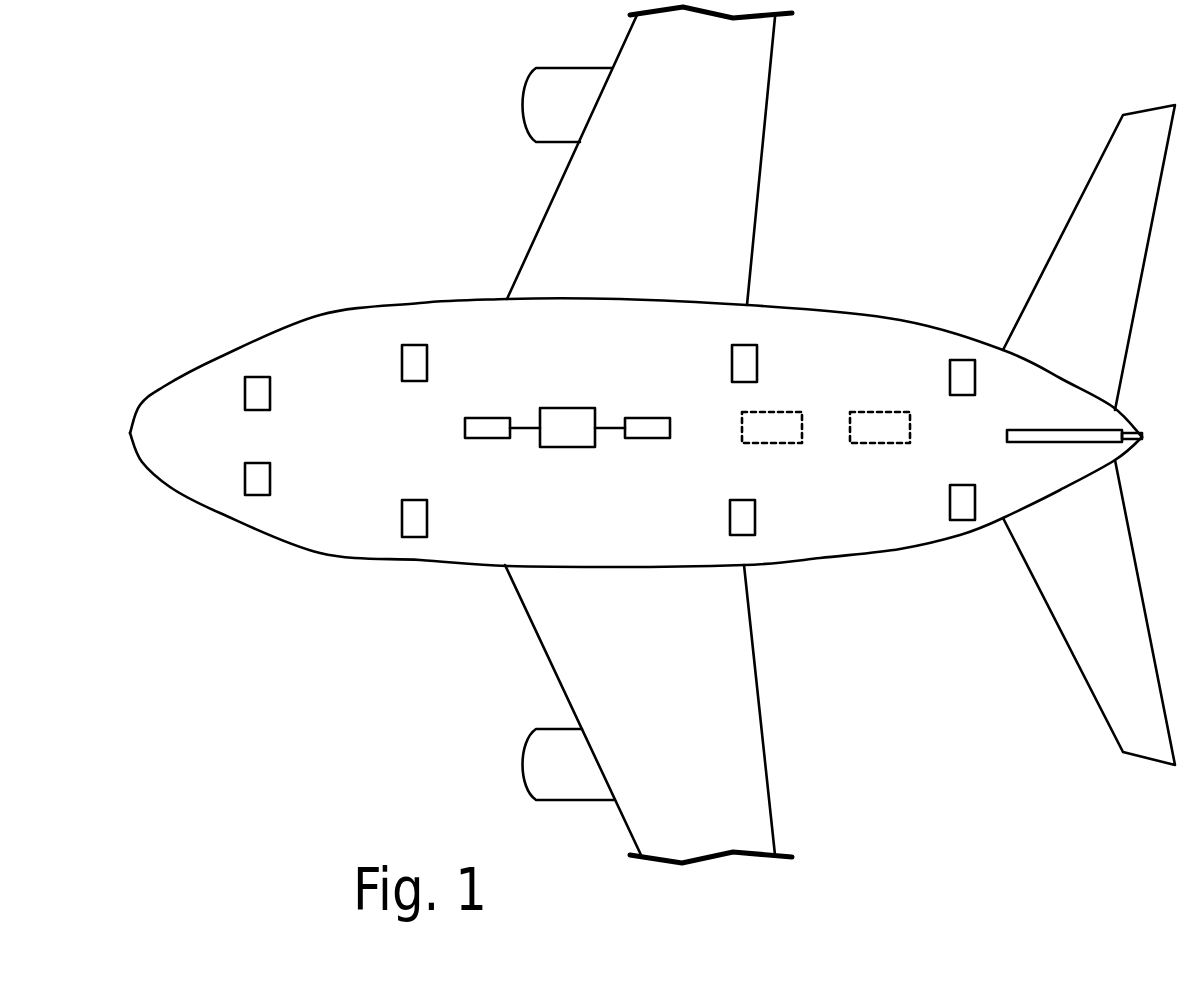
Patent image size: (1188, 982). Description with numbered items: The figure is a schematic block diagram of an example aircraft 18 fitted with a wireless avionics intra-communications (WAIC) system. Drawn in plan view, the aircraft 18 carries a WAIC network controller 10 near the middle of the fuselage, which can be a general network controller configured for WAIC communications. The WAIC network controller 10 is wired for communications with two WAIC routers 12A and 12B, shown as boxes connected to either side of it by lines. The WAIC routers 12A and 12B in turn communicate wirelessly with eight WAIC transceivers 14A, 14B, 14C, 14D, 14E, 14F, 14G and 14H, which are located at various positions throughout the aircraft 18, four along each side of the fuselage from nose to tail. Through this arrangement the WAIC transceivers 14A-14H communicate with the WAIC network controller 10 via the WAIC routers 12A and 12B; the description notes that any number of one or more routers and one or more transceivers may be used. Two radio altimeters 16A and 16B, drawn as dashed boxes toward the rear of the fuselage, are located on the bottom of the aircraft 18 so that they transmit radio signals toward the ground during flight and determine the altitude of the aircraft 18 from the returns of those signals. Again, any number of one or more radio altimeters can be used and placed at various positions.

The WAIC network controller 10 is at (568, 447).
The WAIC router 12A is at (488, 438).
The WAIC router 12B is at (648, 438).
The WAIC transceiver 14A is at (258, 377).
The WAIC transceiver 14B is at (417, 345).
The WAIC transceiver 14C is at (745, 345).
The WAIC transceiver 14D is at (958, 372).
The WAIC transceiver 14E is at (258, 495).
The WAIC transceiver 14F is at (413, 537).
The WAIC transceiver 14G is at (755, 517).
The WAIC transceiver 14H is at (963, 520).
The radio altimeter 16A is at (775, 412).
The radio altimeter 16B is at (880, 443).
The aircraft 18 is at (547, 210).